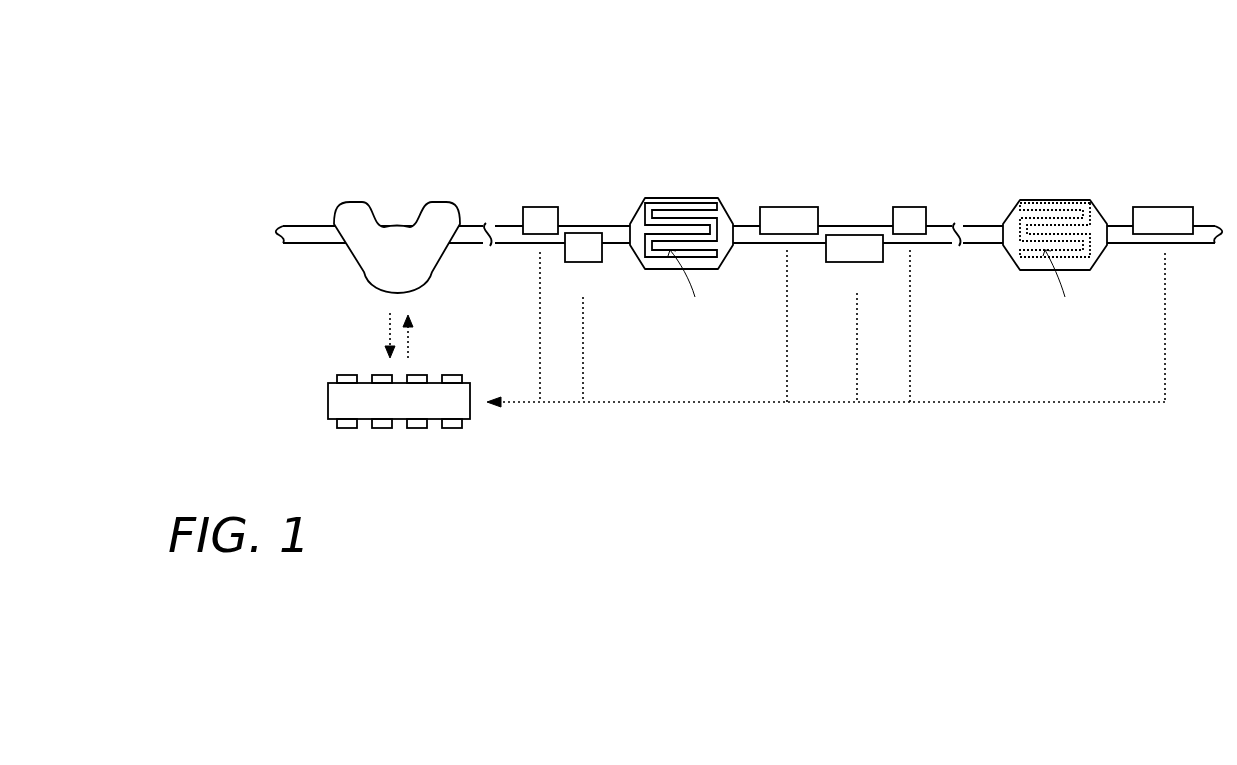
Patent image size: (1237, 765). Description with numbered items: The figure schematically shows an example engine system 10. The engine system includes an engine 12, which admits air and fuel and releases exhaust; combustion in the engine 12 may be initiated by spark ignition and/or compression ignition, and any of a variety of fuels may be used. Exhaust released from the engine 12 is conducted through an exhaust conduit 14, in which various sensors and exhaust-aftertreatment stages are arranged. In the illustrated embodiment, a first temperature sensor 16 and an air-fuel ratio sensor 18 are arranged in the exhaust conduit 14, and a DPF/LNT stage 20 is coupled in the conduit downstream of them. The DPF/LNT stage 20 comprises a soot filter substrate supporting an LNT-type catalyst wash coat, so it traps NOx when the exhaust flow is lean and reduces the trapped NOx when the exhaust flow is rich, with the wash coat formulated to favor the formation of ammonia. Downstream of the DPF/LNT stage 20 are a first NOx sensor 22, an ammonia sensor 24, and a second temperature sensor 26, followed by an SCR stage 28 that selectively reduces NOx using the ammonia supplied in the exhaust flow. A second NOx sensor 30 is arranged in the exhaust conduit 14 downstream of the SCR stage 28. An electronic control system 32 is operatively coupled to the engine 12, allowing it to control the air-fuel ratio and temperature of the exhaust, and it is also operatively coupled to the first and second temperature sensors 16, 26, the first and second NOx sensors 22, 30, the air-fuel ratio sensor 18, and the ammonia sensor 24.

The engine system 10 is at (307, 138).
The engine 12 is at (383, 258).
The exhaust conduit 14 is at (522, 243).
The first temperature sensor 16 is at (540, 207).
The air-fuel ratio sensor 18 is at (583, 262).
The DPF/LNT stage 20 is at (680, 198).
The first NOx sensor 22 is at (787, 207).
The ammonia sensor 24 is at (857, 262).
The second temperature sensor 26 is at (910, 207).
The SCR stage 28 is at (1052, 200).
The second NOx sensor 30 is at (1163, 207).
The electronic control system 32 is at (387, 413).